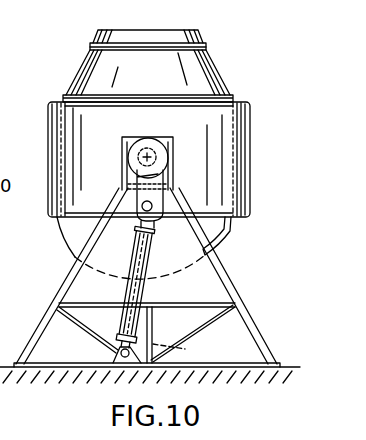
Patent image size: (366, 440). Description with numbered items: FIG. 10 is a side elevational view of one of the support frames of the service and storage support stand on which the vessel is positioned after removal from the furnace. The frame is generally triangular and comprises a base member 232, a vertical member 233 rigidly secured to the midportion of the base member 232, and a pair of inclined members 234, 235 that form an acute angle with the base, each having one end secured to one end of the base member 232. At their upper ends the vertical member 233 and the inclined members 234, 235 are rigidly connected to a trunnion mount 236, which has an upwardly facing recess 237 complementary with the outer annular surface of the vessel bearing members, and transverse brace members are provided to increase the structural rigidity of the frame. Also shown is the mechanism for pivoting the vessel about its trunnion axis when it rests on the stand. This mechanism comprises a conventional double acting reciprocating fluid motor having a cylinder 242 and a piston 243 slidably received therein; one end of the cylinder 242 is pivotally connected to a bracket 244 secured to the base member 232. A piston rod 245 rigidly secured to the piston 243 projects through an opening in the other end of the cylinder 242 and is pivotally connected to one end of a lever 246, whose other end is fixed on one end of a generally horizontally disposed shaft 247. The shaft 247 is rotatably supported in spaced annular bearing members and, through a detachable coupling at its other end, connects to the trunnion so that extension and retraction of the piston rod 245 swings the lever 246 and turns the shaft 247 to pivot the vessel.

The base member 232 is at (62, 368).
The vertical member 233 is at (150, 323).
The inclined member 234 is at (54, 309).
The inclined member 235 is at (253, 316).
The trunnion mount 236 is at (172, 181).
The upwardly facing recess 237 is at (174, 136).
The cylinder 242 is at (126, 288).
The piston 243 is at (185, 349).
The bracket 244 is at (114, 357).
The piston rod 245 is at (228, 234).
The lever 246 is at (137, 177).
The shaft 247 is at (140, 138).